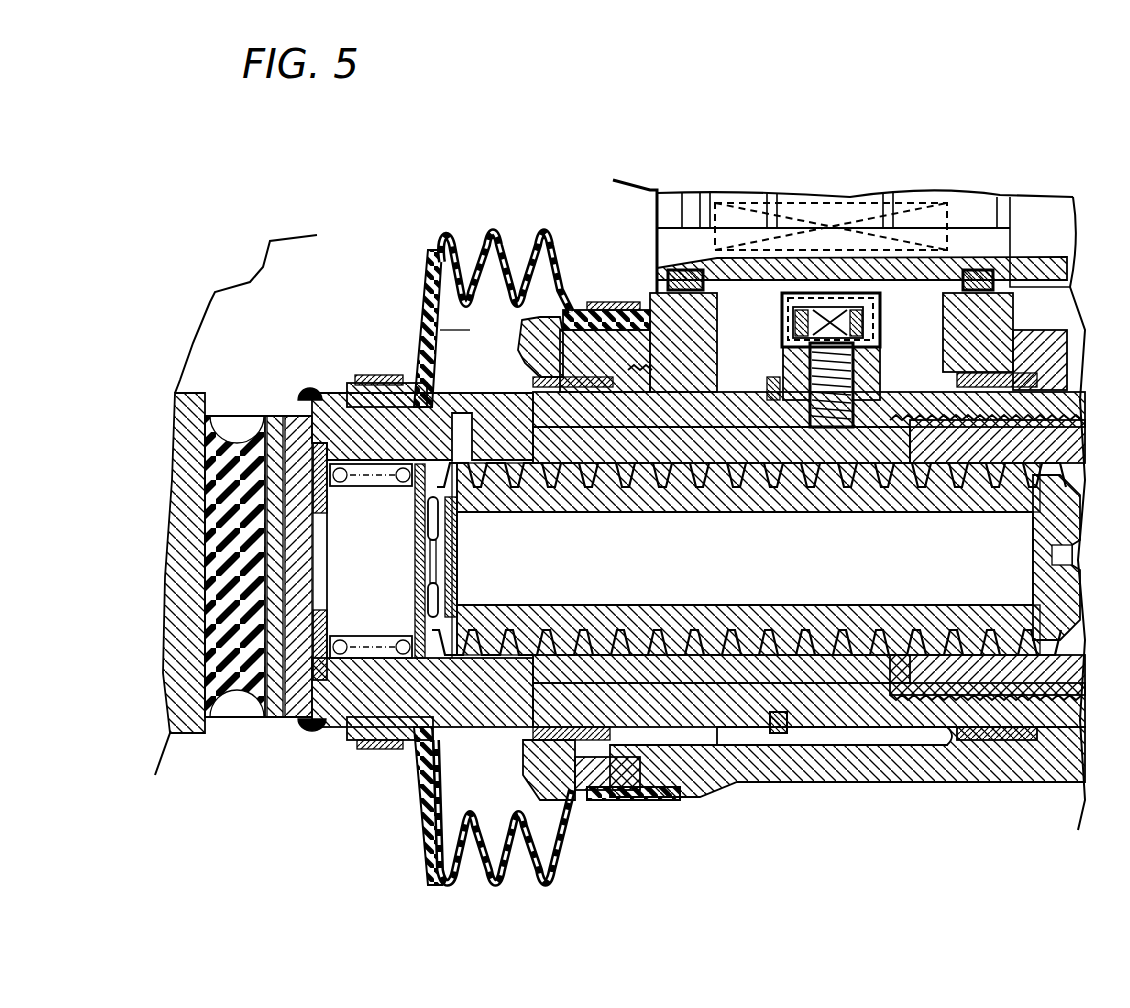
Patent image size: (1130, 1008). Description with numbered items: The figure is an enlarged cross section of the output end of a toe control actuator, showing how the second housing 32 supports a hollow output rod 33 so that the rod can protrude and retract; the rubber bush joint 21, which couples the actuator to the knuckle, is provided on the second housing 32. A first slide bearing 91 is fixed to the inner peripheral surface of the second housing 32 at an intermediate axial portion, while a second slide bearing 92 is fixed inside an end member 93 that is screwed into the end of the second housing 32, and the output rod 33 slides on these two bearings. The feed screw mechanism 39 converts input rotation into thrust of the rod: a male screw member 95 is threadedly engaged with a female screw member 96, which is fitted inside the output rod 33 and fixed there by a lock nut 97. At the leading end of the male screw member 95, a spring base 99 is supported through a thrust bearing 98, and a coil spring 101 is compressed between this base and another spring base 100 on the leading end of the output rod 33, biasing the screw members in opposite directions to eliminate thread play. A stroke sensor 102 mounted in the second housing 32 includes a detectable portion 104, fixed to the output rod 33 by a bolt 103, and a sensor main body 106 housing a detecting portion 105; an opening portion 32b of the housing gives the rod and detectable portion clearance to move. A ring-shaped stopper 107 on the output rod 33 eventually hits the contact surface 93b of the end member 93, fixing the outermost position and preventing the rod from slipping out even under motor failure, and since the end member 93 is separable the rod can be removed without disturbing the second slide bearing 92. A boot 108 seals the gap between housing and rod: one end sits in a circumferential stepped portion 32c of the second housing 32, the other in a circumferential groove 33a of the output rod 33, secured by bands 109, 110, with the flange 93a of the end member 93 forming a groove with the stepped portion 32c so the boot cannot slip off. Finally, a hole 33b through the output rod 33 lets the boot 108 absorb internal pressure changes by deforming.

The rubber bush joint 21 is at (222, 432).
The second housing 32 is at (909, 792).
The opening portion 32b is at (718, 323).
The circumferential stepped portion 32c is at (643, 292).
The output rod 33 is at (462, 738).
The circumferential groove 33a is at (353, 382).
The hole 33b is at (430, 302).
The feed screw mechanism 39 is at (937, 740).
The first slide bearing 91 is at (1015, 365).
The second slide bearing 92 is at (555, 375).
The end member 93 is at (681, 762).
The flange 93a is at (452, 330).
The contact surface 93b is at (722, 743).
The male screw member 95 is at (777, 597).
The female screw member 96 is at (738, 616).
The lock nut 97 is at (967, 512).
The thrust bearing 98 is at (448, 558).
The spring base 99 is at (412, 563).
The spring base 100 is at (345, 614).
The coil spring 101 is at (400, 490).
The stroke sensor 102 is at (1042, 213).
The bolt 103 is at (862, 377).
The detectable portion 104 is at (845, 300).
The detecting portion 105 is at (815, 205).
The sensor main body 106 is at (683, 222).
The stopper 107 is at (790, 733).
The boot 108 is at (470, 290).
The band 109 is at (617, 292).
The band 110 is at (371, 376).